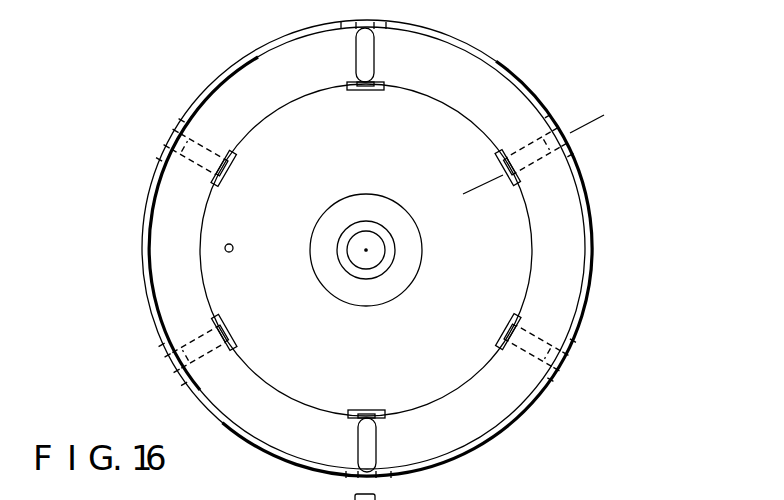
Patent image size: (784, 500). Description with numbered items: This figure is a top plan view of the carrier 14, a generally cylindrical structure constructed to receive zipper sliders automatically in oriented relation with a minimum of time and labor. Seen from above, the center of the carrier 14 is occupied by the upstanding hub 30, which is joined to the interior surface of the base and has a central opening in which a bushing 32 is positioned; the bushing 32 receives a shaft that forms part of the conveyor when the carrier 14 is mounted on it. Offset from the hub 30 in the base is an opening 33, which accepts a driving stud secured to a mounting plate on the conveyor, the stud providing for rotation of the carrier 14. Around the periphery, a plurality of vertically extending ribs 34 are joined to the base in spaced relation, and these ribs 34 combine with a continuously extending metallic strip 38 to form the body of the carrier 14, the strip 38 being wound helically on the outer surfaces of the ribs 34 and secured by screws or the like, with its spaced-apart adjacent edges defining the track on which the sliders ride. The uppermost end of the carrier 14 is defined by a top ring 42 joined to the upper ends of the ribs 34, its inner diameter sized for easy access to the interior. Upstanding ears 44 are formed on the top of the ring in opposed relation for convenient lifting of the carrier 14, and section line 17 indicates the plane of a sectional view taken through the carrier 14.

The carrier 14 is at (609, 218).
The section line 17 is at (597, 98).
The hub 30 is at (406, 272).
The bushing 32 is at (381, 232).
The opening 33 is at (230, 243).
The ribs 34 is at (377, 408).
The continuously extending metallic strip 38 is at (592, 287).
The top ring 42 is at (503, 98).
The ears 44 is at (366, 57).